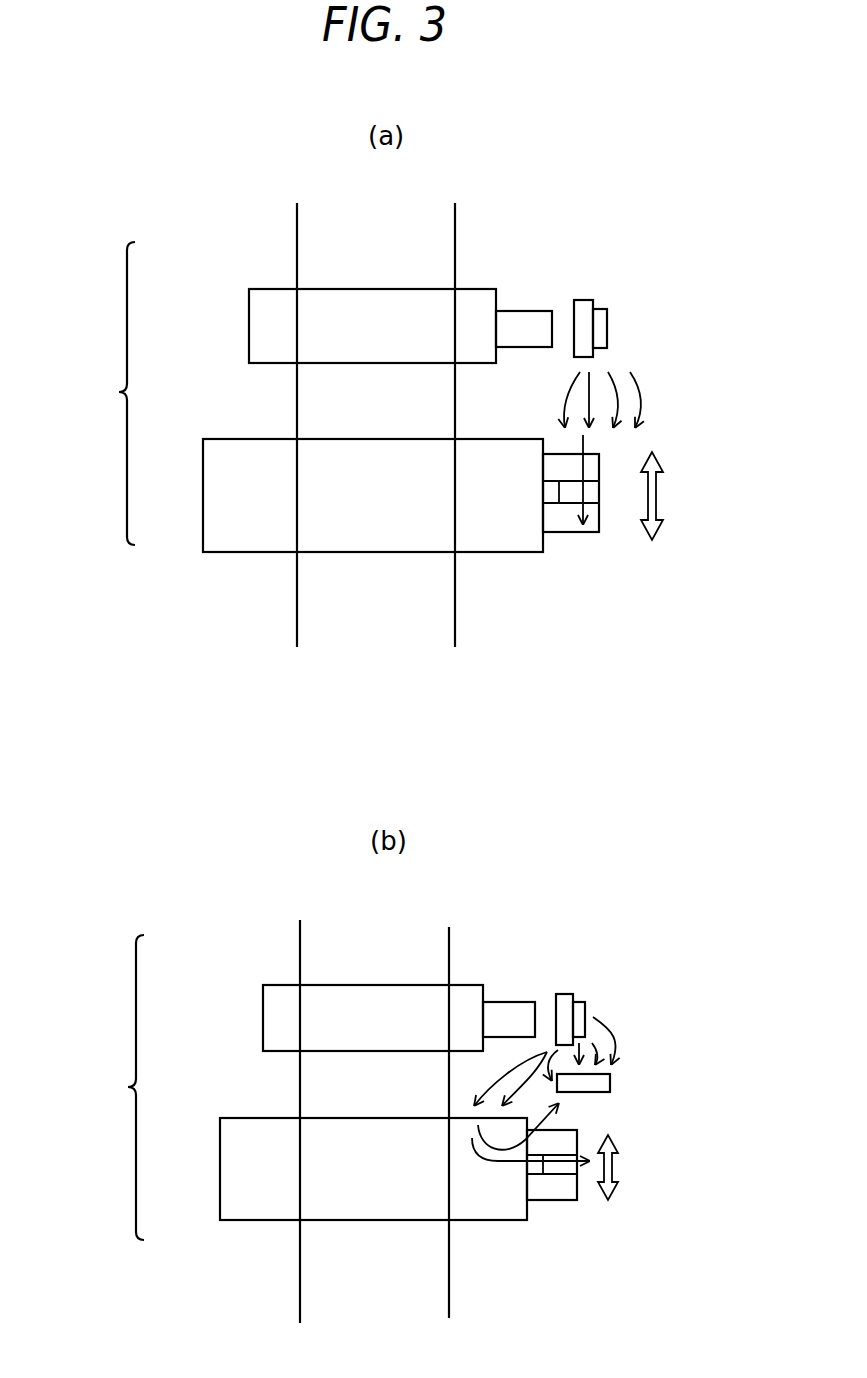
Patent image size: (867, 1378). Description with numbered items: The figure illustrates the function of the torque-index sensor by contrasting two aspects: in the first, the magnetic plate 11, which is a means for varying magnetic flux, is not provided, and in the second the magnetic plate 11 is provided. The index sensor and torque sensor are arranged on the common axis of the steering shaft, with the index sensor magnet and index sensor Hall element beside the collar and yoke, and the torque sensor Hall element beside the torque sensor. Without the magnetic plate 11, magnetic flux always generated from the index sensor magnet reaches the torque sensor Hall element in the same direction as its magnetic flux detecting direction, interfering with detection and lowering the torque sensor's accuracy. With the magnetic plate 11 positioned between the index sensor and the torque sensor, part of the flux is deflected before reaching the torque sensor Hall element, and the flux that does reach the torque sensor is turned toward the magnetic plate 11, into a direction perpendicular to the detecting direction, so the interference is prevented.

The magnetic plate 11 is at (610, 1085).